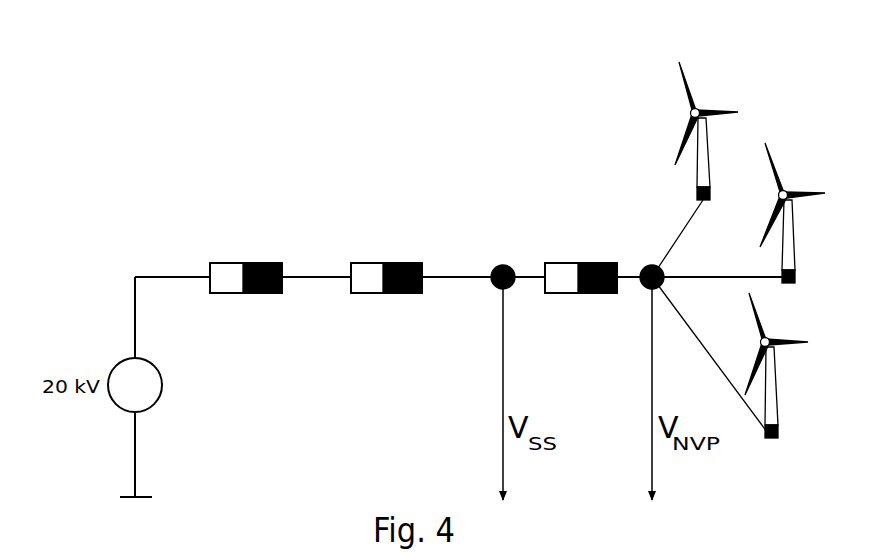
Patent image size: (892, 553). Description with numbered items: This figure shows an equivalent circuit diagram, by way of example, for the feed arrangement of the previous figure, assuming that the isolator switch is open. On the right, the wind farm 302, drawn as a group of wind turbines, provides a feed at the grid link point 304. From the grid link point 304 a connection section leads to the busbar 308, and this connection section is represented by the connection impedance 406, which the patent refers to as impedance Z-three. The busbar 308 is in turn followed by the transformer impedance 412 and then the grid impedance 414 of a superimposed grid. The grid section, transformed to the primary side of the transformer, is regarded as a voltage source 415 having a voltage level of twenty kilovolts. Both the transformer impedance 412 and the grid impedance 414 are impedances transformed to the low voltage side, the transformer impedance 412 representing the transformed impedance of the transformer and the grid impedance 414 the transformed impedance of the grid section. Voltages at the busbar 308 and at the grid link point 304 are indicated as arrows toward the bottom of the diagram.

The wind farm 302 is at (713, 76).
The grid link point 304 is at (645, 290).
The busbar 308 is at (515, 266).
The connection impedance 406 is at (597, 245).
The transformer impedance 412 is at (383, 311).
The grid impedance 414 is at (243, 318).
The voltage source 415 is at (170, 416).